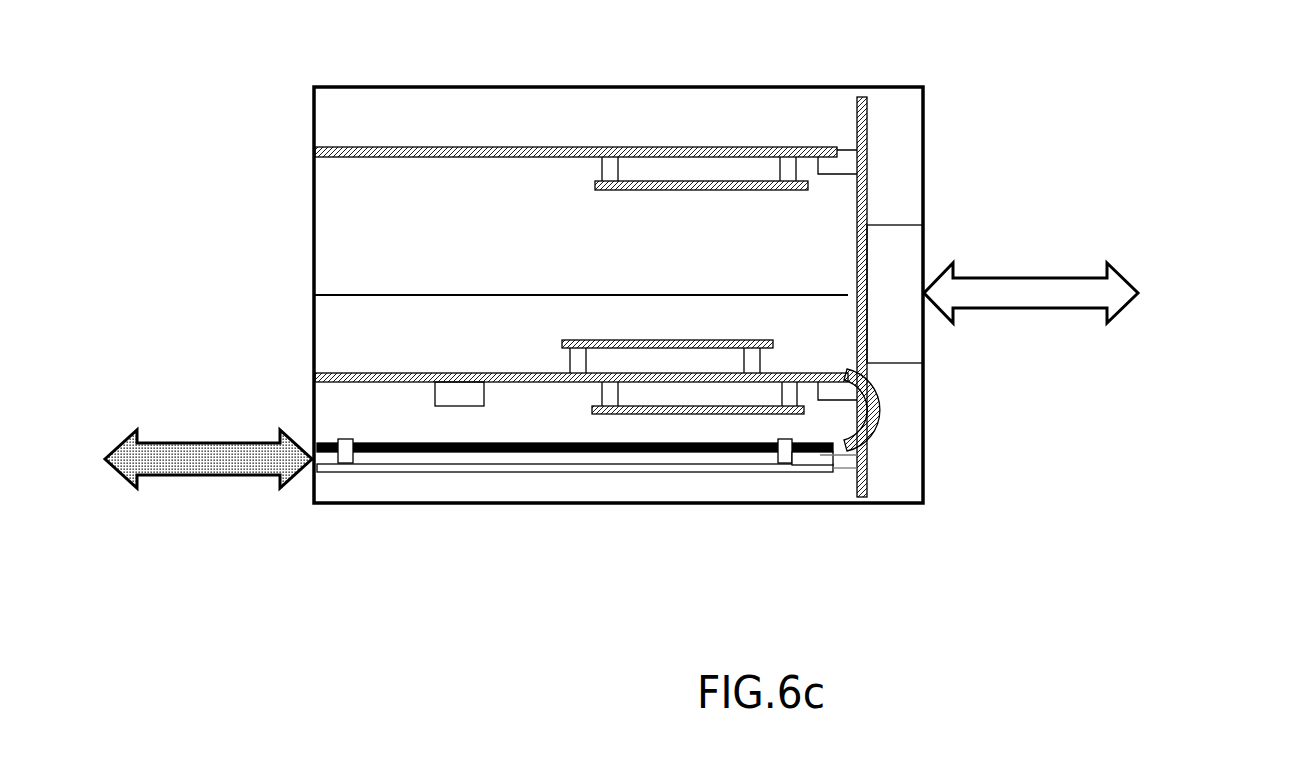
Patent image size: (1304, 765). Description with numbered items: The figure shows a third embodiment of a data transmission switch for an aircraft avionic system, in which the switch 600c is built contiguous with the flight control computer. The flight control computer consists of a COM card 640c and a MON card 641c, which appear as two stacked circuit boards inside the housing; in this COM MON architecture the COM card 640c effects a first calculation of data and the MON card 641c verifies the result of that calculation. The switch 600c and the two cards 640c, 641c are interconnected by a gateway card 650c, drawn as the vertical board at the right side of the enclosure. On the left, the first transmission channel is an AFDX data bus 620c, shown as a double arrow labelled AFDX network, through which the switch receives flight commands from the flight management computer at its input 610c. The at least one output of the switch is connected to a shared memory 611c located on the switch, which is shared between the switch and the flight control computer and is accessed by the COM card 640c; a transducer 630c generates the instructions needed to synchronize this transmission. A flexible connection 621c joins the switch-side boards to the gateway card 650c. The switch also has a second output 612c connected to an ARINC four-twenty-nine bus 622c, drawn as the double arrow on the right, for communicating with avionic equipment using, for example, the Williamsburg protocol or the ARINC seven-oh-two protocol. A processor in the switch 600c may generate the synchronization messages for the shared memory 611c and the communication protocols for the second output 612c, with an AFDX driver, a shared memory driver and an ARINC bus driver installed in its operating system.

The switch 600c is at (485, 448).
The input 610c is at (345, 450).
The shared memory 611c is at (845, 466).
The second output 612c is at (903, 325).
The AFDX data bus 620c is at (215, 477).
The flexible connection 621c is at (883, 443).
The ARINC 429 bus 622c is at (1027, 272).
The power bus 630c is at (785, 456).
The COM card 640c is at (367, 377).
The MON card 641c is at (375, 152).
The gateway card 650c is at (860, 157).